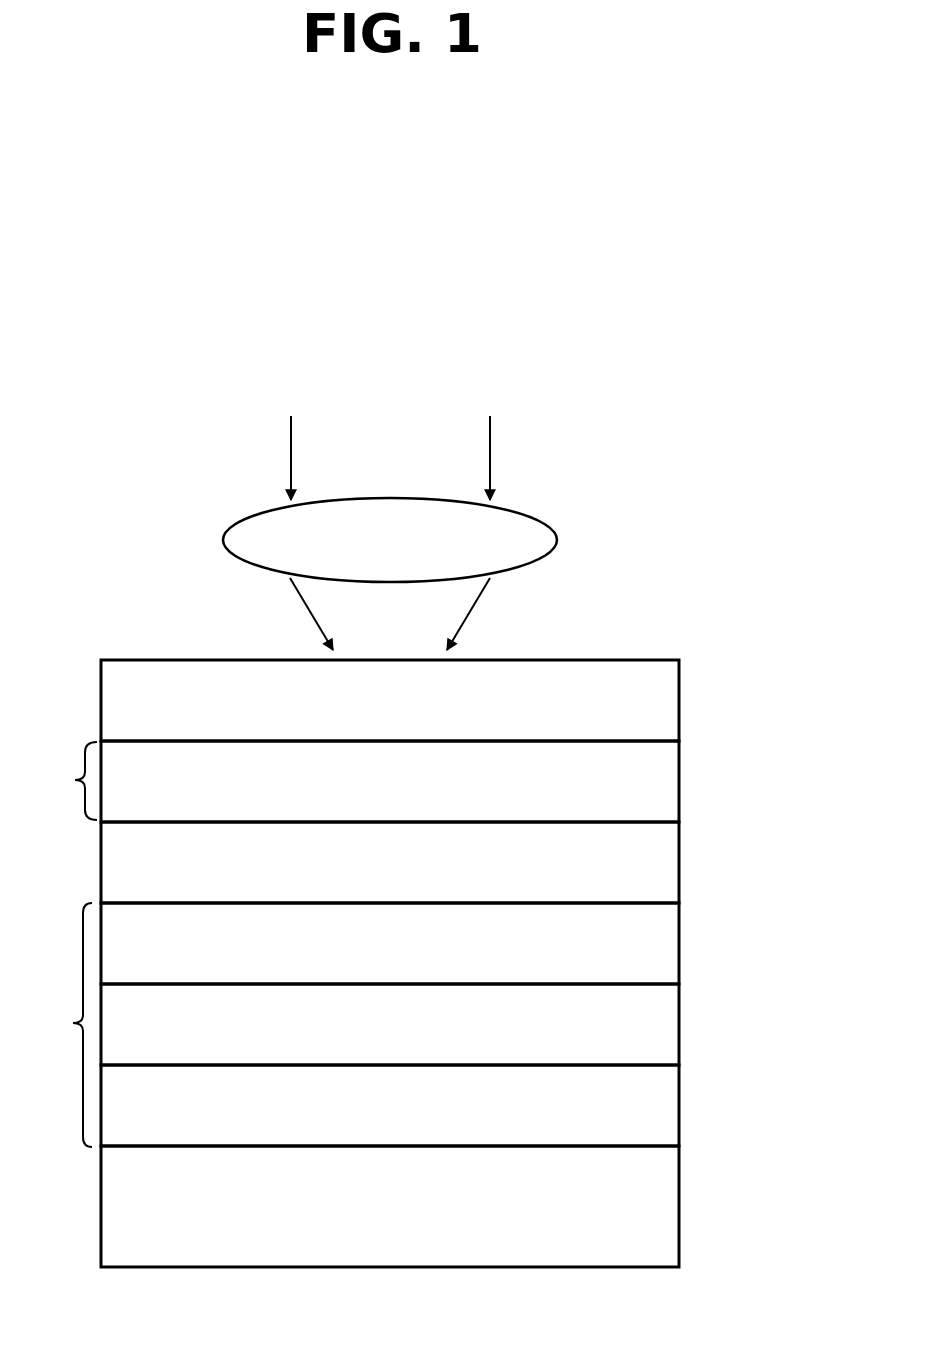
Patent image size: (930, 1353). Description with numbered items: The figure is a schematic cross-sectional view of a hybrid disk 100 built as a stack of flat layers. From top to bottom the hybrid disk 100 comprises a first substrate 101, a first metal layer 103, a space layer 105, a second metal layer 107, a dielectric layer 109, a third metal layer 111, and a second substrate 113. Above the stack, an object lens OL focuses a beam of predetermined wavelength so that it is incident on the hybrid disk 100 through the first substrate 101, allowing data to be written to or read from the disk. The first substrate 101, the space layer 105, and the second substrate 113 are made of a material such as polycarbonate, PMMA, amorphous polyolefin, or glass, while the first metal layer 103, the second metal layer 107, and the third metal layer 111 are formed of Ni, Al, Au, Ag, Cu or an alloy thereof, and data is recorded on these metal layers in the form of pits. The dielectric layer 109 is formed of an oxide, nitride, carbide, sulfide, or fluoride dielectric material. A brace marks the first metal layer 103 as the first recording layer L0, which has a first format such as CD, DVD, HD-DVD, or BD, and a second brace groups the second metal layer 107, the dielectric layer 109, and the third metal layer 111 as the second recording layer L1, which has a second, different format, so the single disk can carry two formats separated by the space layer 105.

The hybrid disk 100 is at (665, 577).
The first substrate 101 is at (672, 707).
The first metal layer 103 is at (672, 787).
The space layer 105 is at (672, 868).
The second metal layer 107 is at (672, 948).
The dielectric layer 109 is at (672, 1029).
The third metal layer 111 is at (672, 1111).
The second substrate 113 is at (672, 1212).
The object lens OL is at (390, 540).
The first recording layer L0 is at (66, 781).
The second recording layer L1 is at (62, 1025).